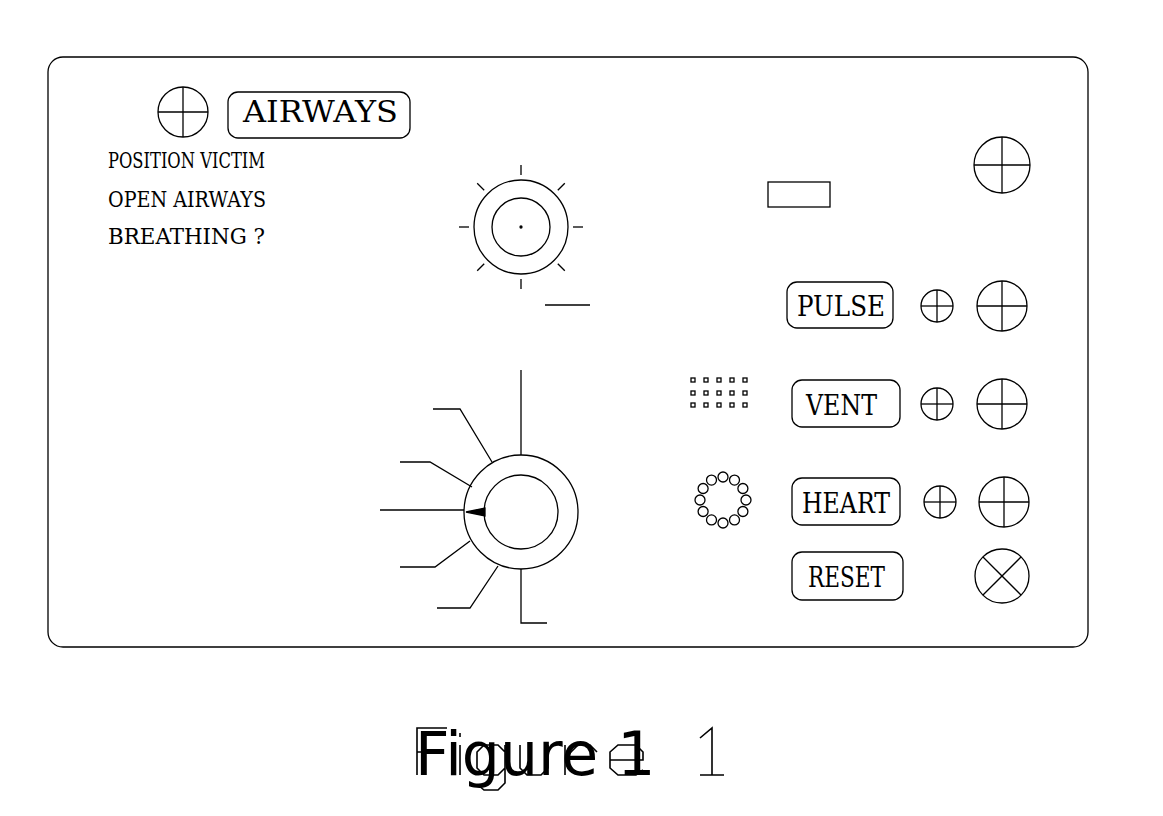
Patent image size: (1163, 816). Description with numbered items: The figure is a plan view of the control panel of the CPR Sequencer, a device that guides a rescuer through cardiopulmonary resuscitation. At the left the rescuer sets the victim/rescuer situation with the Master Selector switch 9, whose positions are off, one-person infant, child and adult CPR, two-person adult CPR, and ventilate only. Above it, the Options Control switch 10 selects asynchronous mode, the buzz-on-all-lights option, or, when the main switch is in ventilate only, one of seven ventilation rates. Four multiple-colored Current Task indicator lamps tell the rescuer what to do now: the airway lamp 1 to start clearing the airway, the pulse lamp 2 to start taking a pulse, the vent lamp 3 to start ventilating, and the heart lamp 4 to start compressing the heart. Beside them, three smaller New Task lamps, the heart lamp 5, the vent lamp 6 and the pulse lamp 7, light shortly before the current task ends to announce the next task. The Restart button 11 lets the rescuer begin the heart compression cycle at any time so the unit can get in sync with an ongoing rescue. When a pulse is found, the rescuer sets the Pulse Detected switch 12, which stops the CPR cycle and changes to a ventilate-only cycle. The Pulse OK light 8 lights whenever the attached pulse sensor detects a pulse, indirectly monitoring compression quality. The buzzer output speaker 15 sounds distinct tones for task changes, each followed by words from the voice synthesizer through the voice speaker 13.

The AIRWAY Current Task indicator lamp 1 is at (165, 97).
The PULSE Current Task indicator lamp 2 is at (1028, 305).
The VENT Current Task indicator lamp 3 is at (1028, 404).
The HEART Current Task indicator lamp 4 is at (1030, 500).
The HEART New Task indicator lamp 5 is at (948, 486).
The VENT New Task indicator lamp 6 is at (944, 388).
The PULSE New Task indicator lamp 7 is at (944, 290).
The Pulse OK light 8 is at (975, 150).
The Master Selector switch 9 is at (505, 565).
The Options Control switch 10 is at (495, 185).
The Restart button 11 is at (1030, 575).
The Pulse Detected switch 12 is at (758, 193).
The voice speaker 13 is at (742, 412).
The buzzer output speaker 15 is at (714, 530).